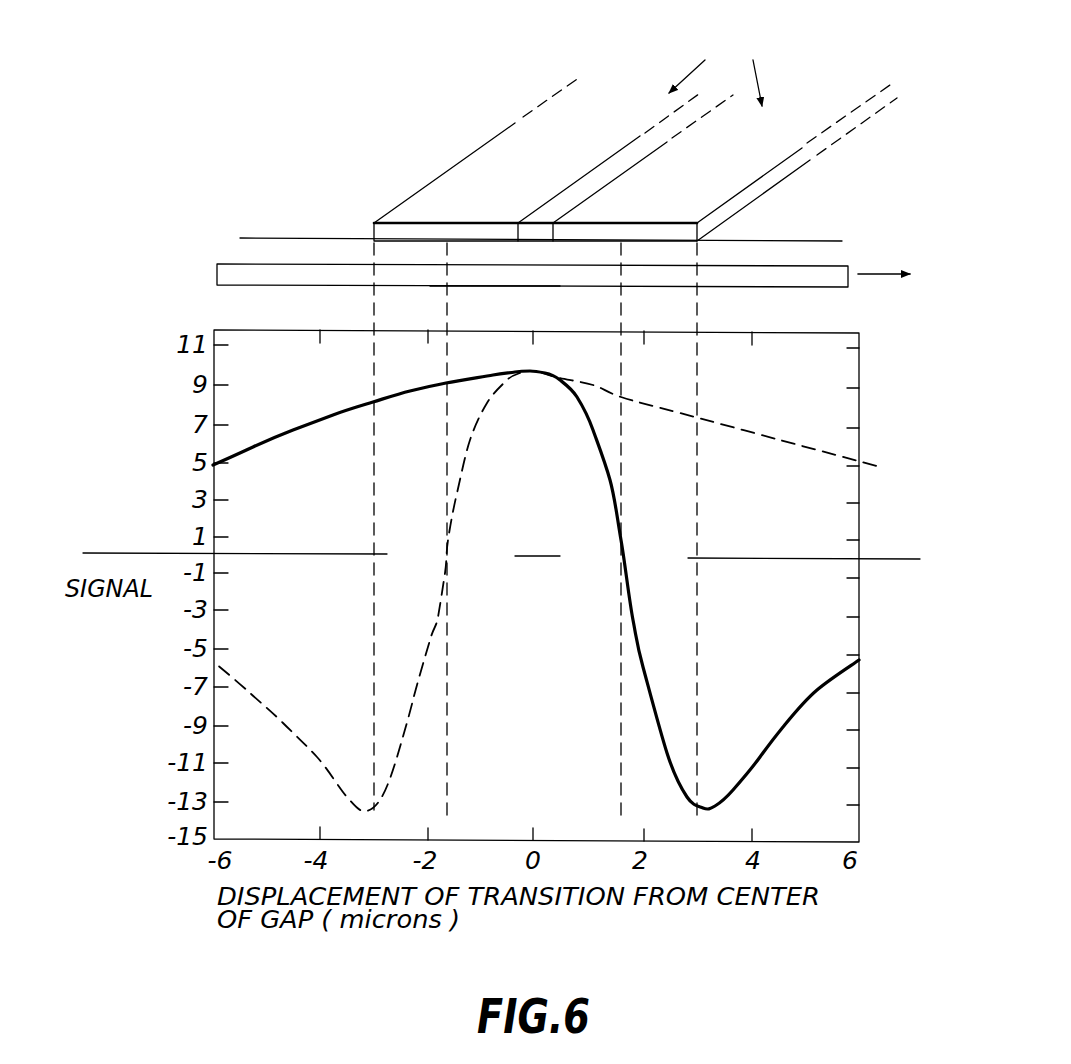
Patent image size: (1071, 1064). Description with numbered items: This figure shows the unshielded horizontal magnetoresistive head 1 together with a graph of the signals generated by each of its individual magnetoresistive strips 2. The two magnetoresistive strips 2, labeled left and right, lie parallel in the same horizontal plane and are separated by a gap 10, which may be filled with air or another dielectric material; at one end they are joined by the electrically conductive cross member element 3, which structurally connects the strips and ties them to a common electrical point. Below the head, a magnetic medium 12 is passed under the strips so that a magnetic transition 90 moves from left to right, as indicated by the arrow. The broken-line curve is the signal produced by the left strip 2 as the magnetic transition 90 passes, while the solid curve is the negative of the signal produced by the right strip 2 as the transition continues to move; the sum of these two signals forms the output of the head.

The magnetoresistive head 1 is at (421, 109).
The magnetoresistive strips 2 is at (423, 190).
The cross member element 3 is at (368, 232).
The gap 10 is at (605, 167).
The magnetic medium 12 is at (849, 267).
The magnetic transition 90 is at (531, 294).